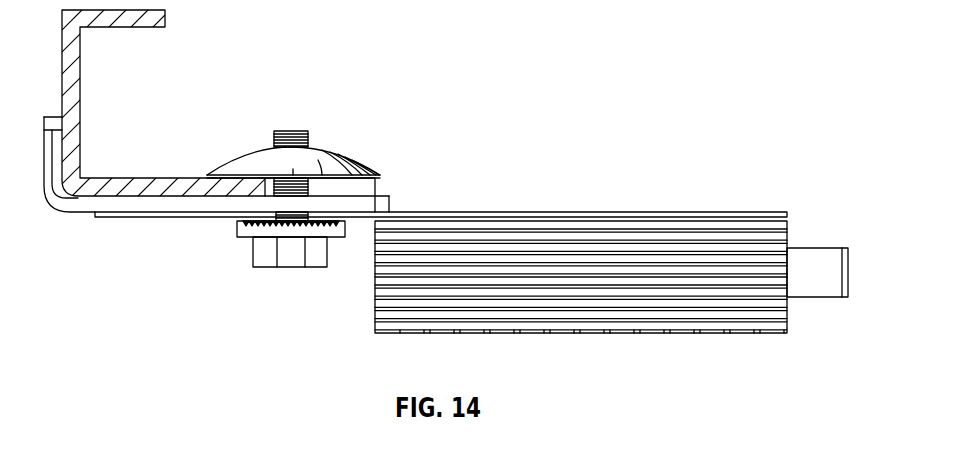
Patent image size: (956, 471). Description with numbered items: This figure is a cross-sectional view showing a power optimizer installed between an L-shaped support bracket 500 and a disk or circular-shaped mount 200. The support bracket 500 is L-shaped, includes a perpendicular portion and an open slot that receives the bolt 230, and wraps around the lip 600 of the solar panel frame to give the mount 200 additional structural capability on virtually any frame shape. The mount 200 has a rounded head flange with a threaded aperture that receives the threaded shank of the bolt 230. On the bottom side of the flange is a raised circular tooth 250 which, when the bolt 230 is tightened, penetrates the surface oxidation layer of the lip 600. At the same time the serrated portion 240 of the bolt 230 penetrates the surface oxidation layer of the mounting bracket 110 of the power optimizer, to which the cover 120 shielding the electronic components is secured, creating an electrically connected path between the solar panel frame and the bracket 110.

The lip of the solar panel frame 600 is at (140, 177).
The support bracket 500 is at (76, 212).
The mounting bracket 110 is at (146, 218).
The cover 120 is at (598, 226).
The circular-shaped mount 200 is at (357, 138).
The circular tooth 250 is at (358, 178).
The serrated portion 240 is at (250, 224).
The bolt 230 is at (290, 268).